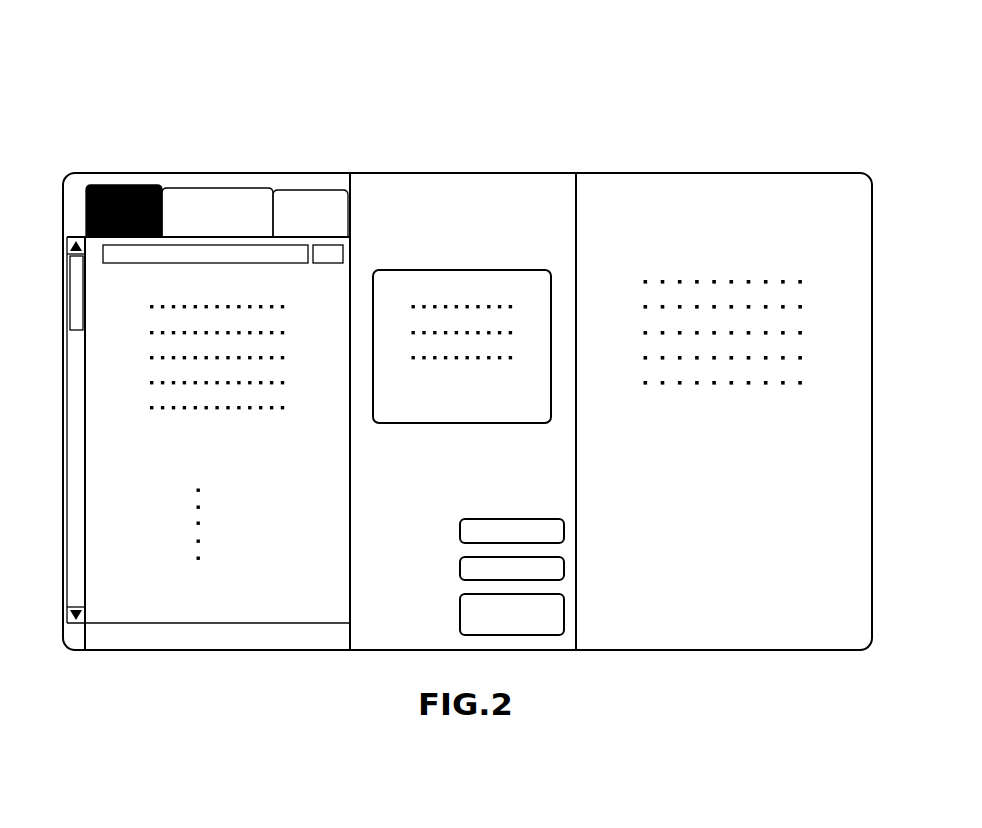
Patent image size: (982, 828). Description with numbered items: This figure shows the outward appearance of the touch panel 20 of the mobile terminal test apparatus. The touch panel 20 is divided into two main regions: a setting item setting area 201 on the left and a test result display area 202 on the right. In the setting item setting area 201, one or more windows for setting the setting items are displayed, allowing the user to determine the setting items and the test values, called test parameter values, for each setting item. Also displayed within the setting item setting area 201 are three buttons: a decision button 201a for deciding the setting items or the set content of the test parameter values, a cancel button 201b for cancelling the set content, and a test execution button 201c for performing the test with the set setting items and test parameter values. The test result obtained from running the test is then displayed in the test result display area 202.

The touch panel 20 is at (650, 74).
The setting item setting area 201 is at (463, 185).
The decision button 201a is at (460, 530).
The cancel button 201b is at (460, 568).
The test execution button 201c is at (460, 614).
The test result display area 202 is at (741, 185).